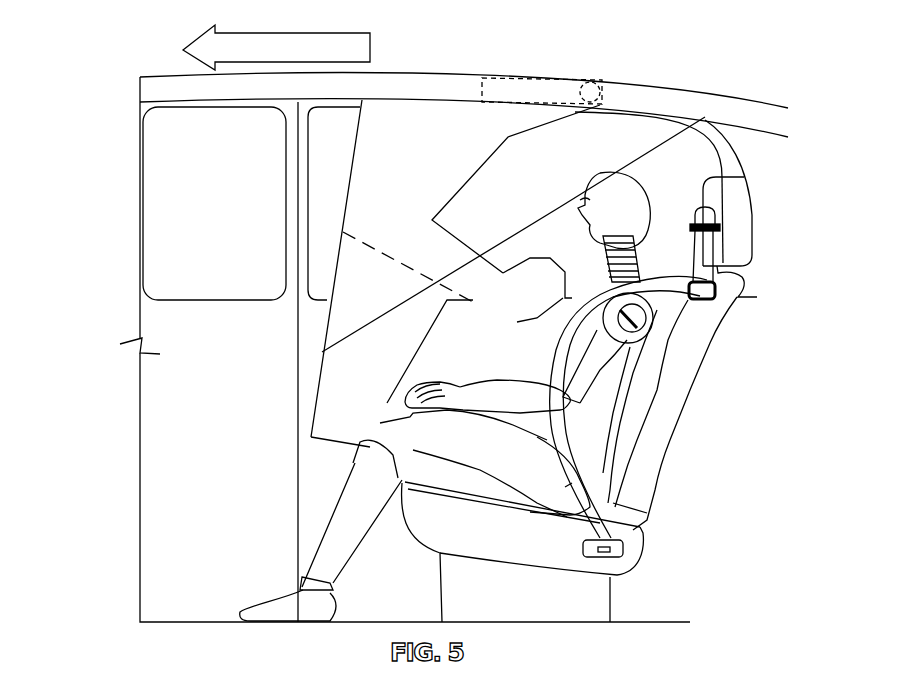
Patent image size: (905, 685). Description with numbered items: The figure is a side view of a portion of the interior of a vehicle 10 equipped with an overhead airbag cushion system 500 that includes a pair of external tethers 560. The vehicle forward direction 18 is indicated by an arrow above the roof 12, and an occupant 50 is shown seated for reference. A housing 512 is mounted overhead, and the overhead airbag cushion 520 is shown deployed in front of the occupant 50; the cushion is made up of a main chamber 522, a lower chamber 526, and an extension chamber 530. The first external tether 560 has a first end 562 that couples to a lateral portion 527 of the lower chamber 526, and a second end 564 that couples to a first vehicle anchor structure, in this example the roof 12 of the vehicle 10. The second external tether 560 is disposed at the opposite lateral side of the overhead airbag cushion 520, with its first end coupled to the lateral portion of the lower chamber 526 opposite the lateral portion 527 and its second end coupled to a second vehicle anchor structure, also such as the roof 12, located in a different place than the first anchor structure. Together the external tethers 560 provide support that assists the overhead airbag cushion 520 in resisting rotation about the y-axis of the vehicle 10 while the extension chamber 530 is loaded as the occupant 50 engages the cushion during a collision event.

The overhead airbag cushion system 500 is at (118, 67).
The vehicle 10 is at (768, 75).
The roof 12 is at (740, 122).
The vehicle forward direction 18 is at (263, 32).
The housing 512 is at (522, 88).
The main chamber 522 is at (363, 180).
The overhead airbag cushion 520 is at (421, 171).
The lateral portion 527 is at (363, 318).
The lower chamber 526 is at (313, 413).
The second end 564 is at (703, 117).
The external tether 560 is at (540, 220).
The first end 562 is at (328, 351).
The occupant 50 is at (588, 165).
The extension chamber 530 is at (505, 298).